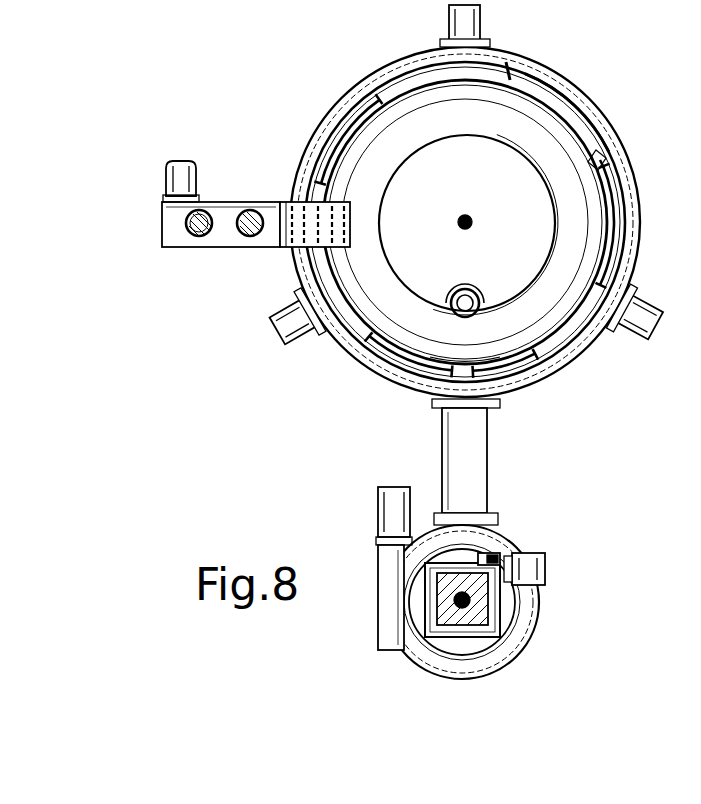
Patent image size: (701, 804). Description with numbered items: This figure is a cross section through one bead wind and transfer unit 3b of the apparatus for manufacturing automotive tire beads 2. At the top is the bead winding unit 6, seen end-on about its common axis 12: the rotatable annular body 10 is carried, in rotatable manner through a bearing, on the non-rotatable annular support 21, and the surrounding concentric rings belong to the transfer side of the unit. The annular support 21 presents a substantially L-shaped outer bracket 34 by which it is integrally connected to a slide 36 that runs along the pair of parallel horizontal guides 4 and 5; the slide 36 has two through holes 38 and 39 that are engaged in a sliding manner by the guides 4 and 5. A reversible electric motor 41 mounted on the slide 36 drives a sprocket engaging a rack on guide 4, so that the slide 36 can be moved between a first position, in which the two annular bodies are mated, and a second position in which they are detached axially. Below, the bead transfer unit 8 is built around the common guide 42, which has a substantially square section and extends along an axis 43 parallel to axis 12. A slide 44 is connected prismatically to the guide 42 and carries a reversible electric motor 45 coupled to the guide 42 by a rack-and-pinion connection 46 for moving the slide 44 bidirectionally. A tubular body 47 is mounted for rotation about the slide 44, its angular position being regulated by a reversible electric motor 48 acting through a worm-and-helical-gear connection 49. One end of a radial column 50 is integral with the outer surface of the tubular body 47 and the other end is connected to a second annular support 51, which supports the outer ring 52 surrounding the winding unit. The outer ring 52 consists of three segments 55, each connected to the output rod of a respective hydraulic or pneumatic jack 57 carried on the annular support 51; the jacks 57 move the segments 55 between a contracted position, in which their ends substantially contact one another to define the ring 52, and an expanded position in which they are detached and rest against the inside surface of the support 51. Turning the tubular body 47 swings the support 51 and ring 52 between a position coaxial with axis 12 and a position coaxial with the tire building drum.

The bead 2 is at (577, 322).
The bead wind and transfer unit 3b is at (600, 92).
The guide 4 is at (203, 212).
The guide 5 is at (252, 212).
The bead winding unit 6 is at (510, 70).
The bead transfer unit 8 is at (577, 364).
The rotatable annular body 10 is at (600, 164).
The axis 12 is at (472, 218).
The annular support 21 is at (570, 240).
The outer bracket 34 is at (292, 246).
The slide 36 is at (216, 210).
The through hole 38 is at (202, 236).
The through hole 39 is at (290, 232).
The reversible electric motor 41 is at (181, 161).
The common guide 42 is at (490, 614).
The axis 43 is at (468, 636).
The slide 44 is at (418, 612).
The reversible electric motor 45 is at (530, 554).
The rack-and-pinion connection 46 is at (492, 556).
The tubular body 47 is at (516, 640).
The reversible electric motor 48 is at (392, 510).
The worm-and-helical-gear connection 49 is at (383, 610).
The radial column 50 is at (465, 455).
The second annular support 51 is at (395, 376).
The outer ring 52 is at (558, 82).
The segment 55 is at (372, 96).
The hydraulic or pneumatic jack 57 is at (449, 24).